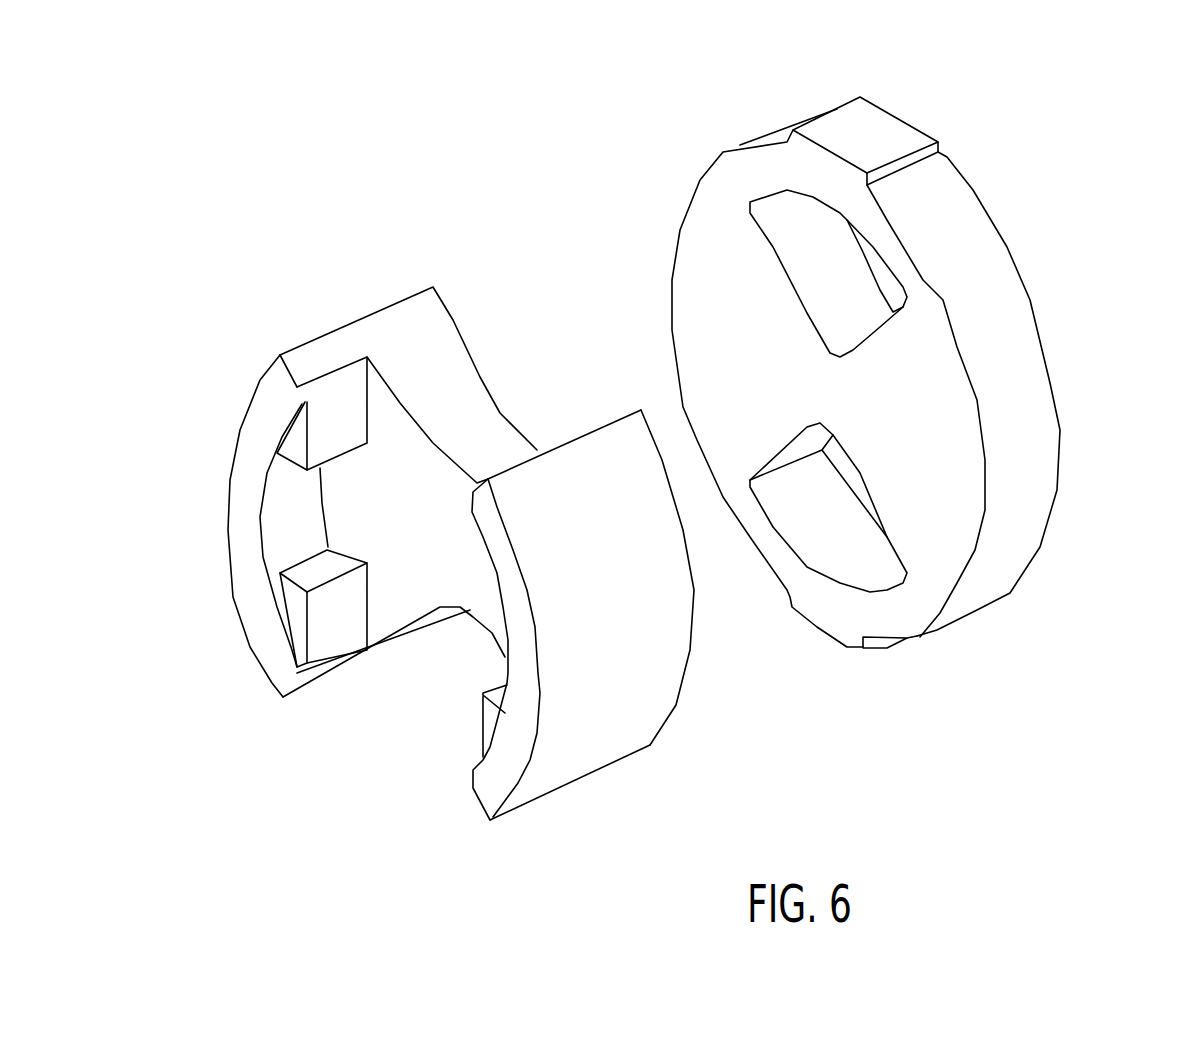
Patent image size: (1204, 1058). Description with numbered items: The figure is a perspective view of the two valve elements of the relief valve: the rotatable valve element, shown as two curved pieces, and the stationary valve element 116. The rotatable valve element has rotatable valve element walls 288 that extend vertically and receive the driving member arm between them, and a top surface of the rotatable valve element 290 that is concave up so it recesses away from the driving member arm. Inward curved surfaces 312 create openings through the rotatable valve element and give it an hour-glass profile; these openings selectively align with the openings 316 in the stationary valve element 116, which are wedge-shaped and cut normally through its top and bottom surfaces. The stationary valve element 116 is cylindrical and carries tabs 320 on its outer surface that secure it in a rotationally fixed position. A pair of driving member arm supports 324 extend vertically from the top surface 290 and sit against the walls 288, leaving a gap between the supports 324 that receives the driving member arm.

The stationary valve element 116 is at (923, 420).
The rotatable valve element walls 288 is at (435, 579).
The top surface of the rotatable valve element 290 is at (462, 607).
The inward curved surfaces 312 is at (443, 387).
The openings 316 is at (837, 317).
The tabs 320 is at (892, 142).
The driving member arm supports 324 is at (297, 445).